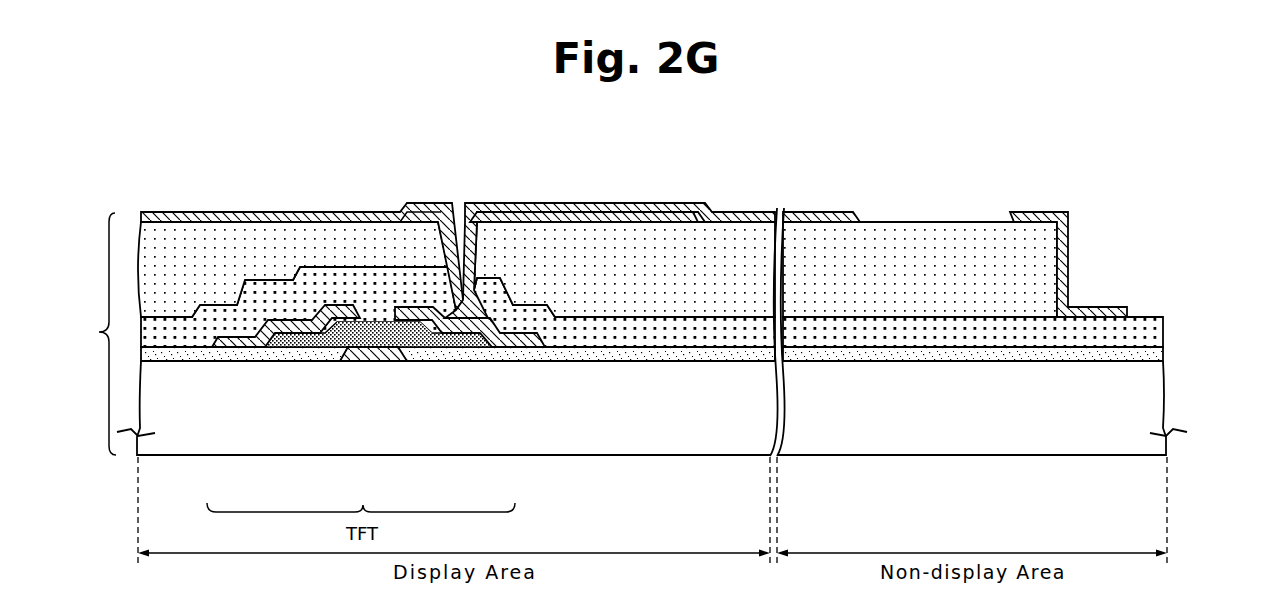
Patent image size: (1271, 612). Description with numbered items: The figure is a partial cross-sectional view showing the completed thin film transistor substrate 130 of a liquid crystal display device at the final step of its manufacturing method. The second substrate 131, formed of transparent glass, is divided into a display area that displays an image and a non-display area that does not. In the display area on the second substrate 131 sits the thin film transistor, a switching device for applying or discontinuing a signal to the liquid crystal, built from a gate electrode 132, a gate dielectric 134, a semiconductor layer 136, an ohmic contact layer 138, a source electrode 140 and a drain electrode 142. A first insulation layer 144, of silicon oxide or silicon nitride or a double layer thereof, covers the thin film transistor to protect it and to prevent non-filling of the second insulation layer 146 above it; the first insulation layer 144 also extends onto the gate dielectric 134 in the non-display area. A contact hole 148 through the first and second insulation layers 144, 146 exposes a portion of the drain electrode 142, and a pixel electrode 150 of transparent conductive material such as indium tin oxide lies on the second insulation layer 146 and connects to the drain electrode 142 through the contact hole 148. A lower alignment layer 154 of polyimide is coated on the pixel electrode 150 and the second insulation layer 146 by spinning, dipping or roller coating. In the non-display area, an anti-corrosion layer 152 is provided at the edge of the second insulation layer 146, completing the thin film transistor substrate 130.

The thin film transistor substrate 130 is at (89, 334).
The second substrate 131 is at (1152, 401).
The gate electrode 132 is at (372, 354).
The gate dielectric 134 is at (431, 355).
The semiconductor layer 136 is at (324, 335).
The ohmic contact layer 138 is at (281, 338).
The source electrode 140 is at (226, 342).
The drain electrode 142 is at (495, 338).
The first insulation layer 144 is at (603, 332).
The second insulation layer 146 is at (250, 240).
The contact hole 148 is at (483, 252).
The pixel electrode 150 is at (604, 221).
The anti-corrosion layer 152 is at (1035, 213).
The lower alignment layer 154 is at (738, 221).